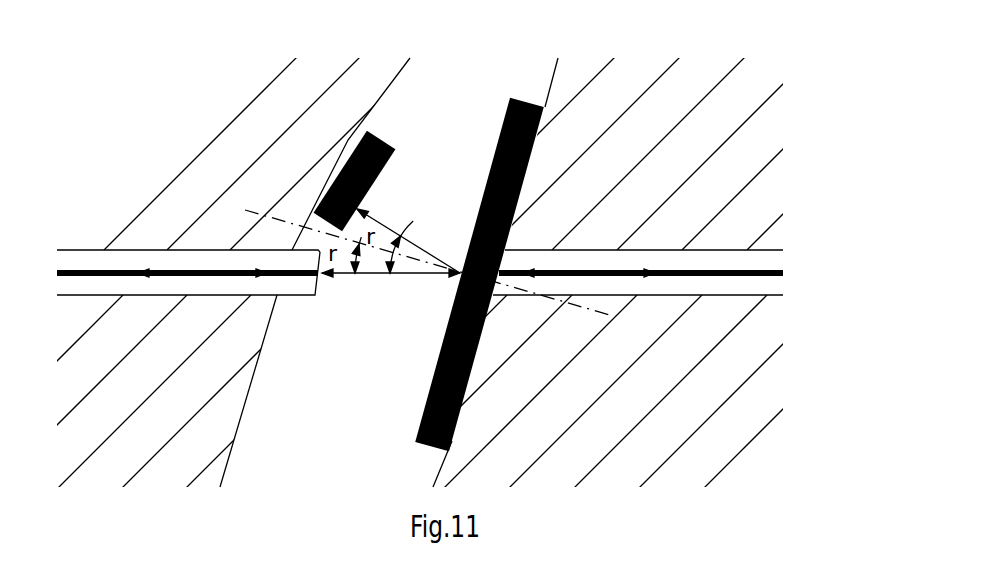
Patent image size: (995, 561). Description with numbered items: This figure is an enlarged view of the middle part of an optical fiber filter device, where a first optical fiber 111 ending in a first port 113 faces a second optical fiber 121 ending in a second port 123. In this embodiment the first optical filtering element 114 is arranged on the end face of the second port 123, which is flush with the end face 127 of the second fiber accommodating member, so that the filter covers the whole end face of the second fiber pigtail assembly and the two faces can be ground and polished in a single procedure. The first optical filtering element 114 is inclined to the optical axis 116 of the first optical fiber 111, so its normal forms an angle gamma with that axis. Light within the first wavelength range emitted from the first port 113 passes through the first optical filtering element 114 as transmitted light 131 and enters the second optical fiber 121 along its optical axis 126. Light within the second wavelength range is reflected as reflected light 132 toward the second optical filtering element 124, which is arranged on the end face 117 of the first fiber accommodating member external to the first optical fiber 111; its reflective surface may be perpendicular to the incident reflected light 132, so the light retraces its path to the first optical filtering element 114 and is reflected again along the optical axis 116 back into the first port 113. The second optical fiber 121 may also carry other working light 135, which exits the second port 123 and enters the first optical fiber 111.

The first optical fiber 111 is at (120, 258).
The first port 113 is at (298, 283).
The first optical filtering element 114 is at (543, 117).
The optical axis 116 is at (113, 273).
The end face 117 is at (400, 82).
The second optical fiber 121 is at (755, 262).
The second port 123 is at (508, 262).
The second optical filtering element 124 is at (368, 128).
The optical axis 126 is at (700, 273).
The end face 127 is at (550, 83).
The transmitted light 131 is at (372, 277).
The reflected light 132 is at (415, 240).
The working light 135 is at (565, 273).